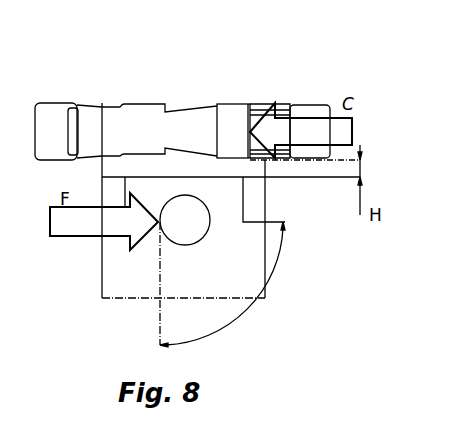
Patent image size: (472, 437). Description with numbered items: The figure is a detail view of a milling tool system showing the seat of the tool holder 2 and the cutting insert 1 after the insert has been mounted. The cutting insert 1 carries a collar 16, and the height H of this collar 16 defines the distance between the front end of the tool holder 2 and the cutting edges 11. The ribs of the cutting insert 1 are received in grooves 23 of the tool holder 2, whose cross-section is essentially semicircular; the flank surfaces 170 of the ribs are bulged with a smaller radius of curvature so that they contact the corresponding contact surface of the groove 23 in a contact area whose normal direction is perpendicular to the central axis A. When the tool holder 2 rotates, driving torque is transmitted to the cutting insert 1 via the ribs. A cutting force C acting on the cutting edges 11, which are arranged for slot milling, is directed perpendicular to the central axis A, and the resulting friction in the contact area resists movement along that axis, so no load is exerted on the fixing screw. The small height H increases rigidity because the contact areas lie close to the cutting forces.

The cutting insert 1 is at (58, 73).
The tool holder 2 is at (312, 326).
The cutting edges 11 is at (258, 110).
The collar 16 is at (133, 164).
The grooves 23 is at (202, 232).
The flank surfaces 170 is at (158, 224).